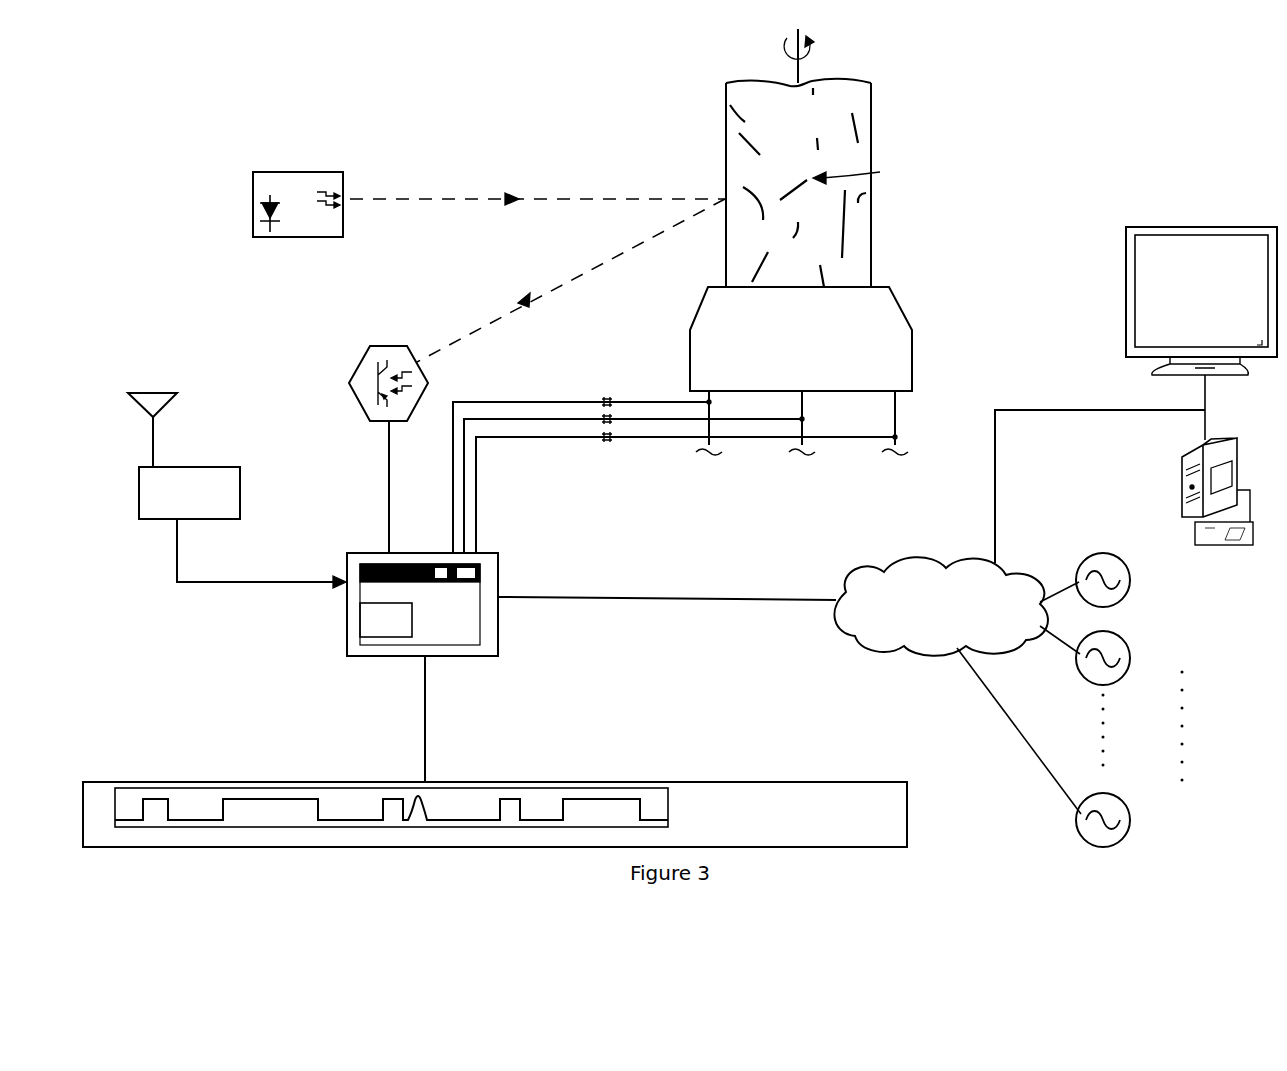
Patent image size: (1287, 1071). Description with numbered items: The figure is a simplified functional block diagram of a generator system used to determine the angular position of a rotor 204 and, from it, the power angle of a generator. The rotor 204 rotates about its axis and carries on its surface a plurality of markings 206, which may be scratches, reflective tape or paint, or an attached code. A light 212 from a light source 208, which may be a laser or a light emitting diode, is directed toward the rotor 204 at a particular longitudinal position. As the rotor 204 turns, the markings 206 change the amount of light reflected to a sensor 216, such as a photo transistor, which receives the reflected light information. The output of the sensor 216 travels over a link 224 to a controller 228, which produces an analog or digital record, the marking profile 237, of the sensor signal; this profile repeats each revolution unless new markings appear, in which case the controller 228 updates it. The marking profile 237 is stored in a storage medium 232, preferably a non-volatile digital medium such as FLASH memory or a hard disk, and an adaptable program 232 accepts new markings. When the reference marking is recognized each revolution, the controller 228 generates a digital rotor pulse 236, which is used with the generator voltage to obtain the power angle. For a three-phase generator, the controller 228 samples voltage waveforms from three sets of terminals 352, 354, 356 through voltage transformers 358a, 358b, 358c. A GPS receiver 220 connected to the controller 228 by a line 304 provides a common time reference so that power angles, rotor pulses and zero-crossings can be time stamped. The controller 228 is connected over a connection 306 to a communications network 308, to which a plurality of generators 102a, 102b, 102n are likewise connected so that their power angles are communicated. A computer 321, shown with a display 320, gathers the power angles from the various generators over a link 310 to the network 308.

The rotor 204 is at (871, 135).
The markings 206 is at (863, 173).
The light source 208 is at (297, 172).
The light 212 is at (457, 198).
The sensor 216 is at (353, 376).
The GPS receiver 220 is at (203, 467).
The link 224 is at (389, 486).
The controller 228 is at (498, 560).
The storage medium 232 is at (376, 628).
The digital rotor pulse 236 is at (427, 808).
The marking profile 237 is at (836, 783).
The line 304 is at (177, 558).
The network connection 306 is at (720, 610).
The communications network 308 is at (889, 563).
The link 310 is at (1040, 410).
The display monitor 320 is at (1201, 226).
The computer 321 is at (1180, 484).
The terminals 352 is at (710, 457).
The terminals 354 is at (803, 457).
The terminals 356 is at (896, 457).
The voltage transformer 358a is at (607, 444).
The voltage transformer 358b is at (609, 404).
The voltage transformer 358c is at (612, 418).
The generator 102a is at (1131, 582).
The generator 102b is at (1131, 645).
The generator 102n is at (1131, 813).